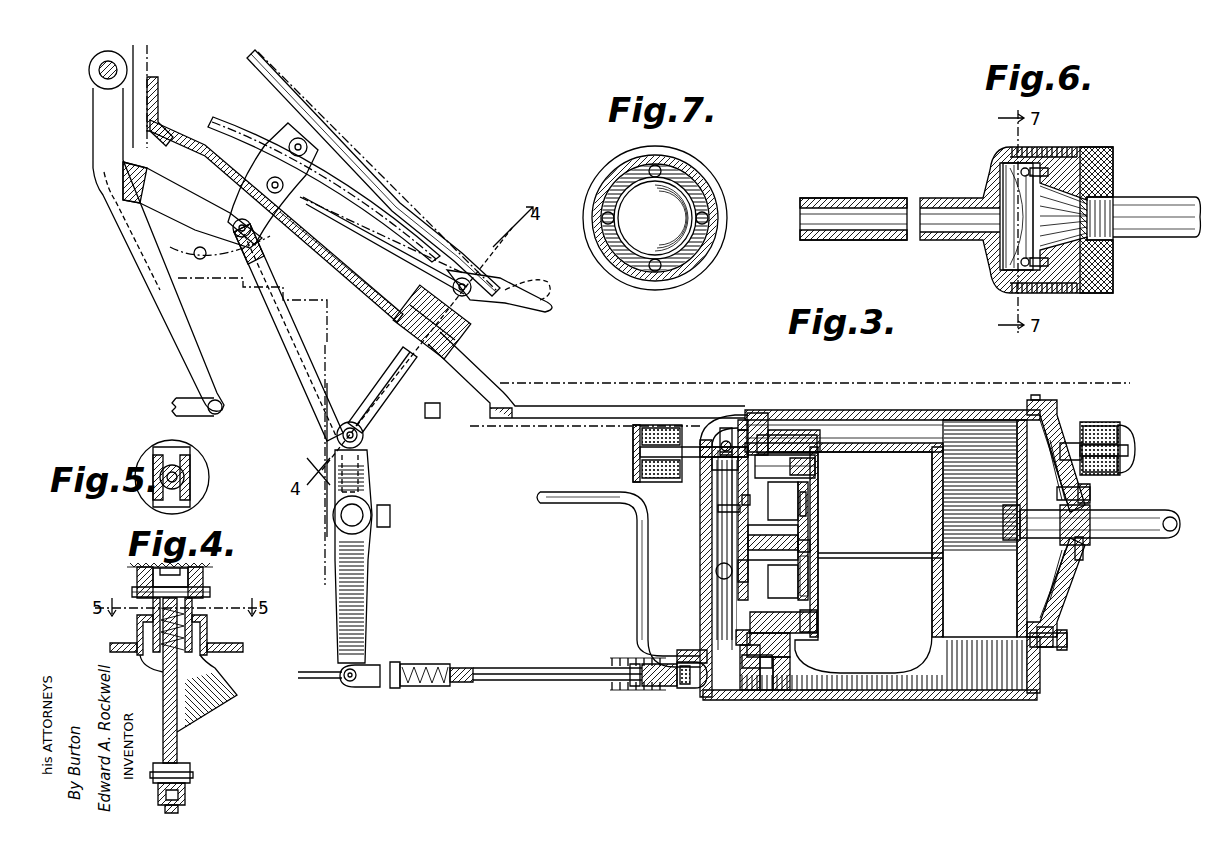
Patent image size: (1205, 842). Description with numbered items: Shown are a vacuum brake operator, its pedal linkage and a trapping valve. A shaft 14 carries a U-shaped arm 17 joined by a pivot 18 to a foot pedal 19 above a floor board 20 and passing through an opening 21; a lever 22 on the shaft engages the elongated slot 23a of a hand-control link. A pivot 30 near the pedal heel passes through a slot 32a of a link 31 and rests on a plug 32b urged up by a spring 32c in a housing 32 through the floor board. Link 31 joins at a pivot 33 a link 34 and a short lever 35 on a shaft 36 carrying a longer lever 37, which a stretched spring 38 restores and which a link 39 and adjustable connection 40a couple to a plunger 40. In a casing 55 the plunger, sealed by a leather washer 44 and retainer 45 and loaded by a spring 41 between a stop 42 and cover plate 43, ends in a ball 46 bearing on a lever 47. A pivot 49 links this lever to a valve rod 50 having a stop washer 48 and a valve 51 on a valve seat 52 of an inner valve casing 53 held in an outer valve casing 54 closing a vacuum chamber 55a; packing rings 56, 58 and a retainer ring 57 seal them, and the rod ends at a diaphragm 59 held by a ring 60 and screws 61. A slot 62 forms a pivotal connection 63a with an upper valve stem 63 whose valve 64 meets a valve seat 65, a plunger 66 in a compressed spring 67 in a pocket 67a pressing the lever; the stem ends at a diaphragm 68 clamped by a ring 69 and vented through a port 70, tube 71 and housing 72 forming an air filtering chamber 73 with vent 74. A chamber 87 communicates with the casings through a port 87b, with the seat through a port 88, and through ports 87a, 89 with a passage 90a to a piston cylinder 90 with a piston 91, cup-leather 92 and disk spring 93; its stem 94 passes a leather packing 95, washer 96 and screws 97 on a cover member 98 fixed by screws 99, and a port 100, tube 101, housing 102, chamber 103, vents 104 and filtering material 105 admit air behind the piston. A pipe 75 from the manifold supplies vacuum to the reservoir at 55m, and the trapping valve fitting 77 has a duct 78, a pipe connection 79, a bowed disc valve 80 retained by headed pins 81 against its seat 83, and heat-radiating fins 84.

In FIG. 3, the shaft 14 is at (92, 72).
In FIG. 3, the U-shaped arm 17 is at (154, 182).
In FIG. 3, the pivot 18 is at (306, 150).
In FIG. 3, the foot pedal 19 is at (397, 205).
In FIG. 3, the floor board 20 is at (485, 372).
In FIG. 3, the opening 21 is at (288, 214).
In FIG. 3, the lever 22 is at (160, 286).
In FIG. 3, the elongated slot 23a is at (178, 400).
In FIG. 3, the pivot 30 is at (465, 279).
In FIG. 4, the pivot 30 is at (208, 580).
In FIG. 3, the link 31 is at (392, 366).
In FIG. 5, the link 31 is at (185, 470).
In FIG. 4, the link 31 is at (178, 752).
In FIG. 3, the housing 32 is at (472, 330).
In FIG. 5, the housing 32 is at (148, 493).
In FIG. 4, the housing 32 is at (208, 630).
In FIG. 3, the slot 32a is at (500, 284).
In FIG. 4, the slot 32a is at (205, 594).
In FIG. 4, the plug 32b is at (130, 580).
In FIG. 5, the spring 32c is at (192, 482).
In FIG. 4, the spring 32c is at (192, 620).
In FIG. 3, the pivot 33 is at (337, 440).
In FIG. 4, the pivot 33 is at (194, 773).
In FIG. 3, the link 34 is at (305, 343).
In FIG. 3, the short lever 35 is at (358, 478).
In FIG. 4, the short lever 35 is at (180, 808).
In FIG. 3, the shaft 36 is at (334, 517).
In FIG. 3, the longer lever 37 is at (348, 601).
In FIG. 3, the stretched spring 38 is at (322, 679).
In FIG. 3, the link 39 is at (368, 688).
In FIG. 3, the plunger 40 is at (486, 682).
In FIG. 3, the adjustable connection 40a is at (431, 687).
In FIG. 3, the spring 41 is at (633, 688).
In FIG. 3, the stop 42 is at (612, 684).
In FIG. 3, the cover plate 43 is at (688, 690).
In FIG. 3, the leather washer 44 is at (669, 690).
In FIG. 3, the retainer 45 is at (672, 688).
In FIG. 3, the ball 46 is at (690, 652).
In FIG. 3, the lever 47 is at (718, 600).
In FIG. 3, the stop washer 48 is at (773, 542).
In FIG. 3, the pivot 49 is at (716, 573).
In FIG. 3, the valve rod 50 is at (738, 546).
In FIG. 3, the valve 51 is at (738, 594).
In FIG. 3, the valve seat 52 is at (783, 586).
In FIG. 3, the inner valve casing 53 is at (806, 524).
In FIG. 3, the outer valve casing 54 is at (806, 500).
In FIG. 3, the casing 55 is at (842, 700).
In FIG. 3, the vacuum chamber 55a is at (883, 568).
In FIG. 3, the vacuum reservoir connection 55m is at (822, 700).
In FIG. 3, the packing ring 56 is at (790, 652).
In FIG. 3, the retainer ring 57 is at (740, 634).
In FIG. 3, the packing ring 58 is at (818, 616).
In FIG. 3, the diaphragm 59 is at (818, 553).
In FIG. 3, the ring 60 is at (808, 545).
In FIG. 3, the screws 61 is at (810, 555).
In FIG. 3, the slot 62 is at (724, 430).
In FIG. 3, the upper valve stem 63 is at (730, 440).
In FIG. 3, the pivotal connection 63a is at (722, 450).
In FIG. 3, the valve 64 is at (800, 464).
In FIG. 3, the valve seat 65 is at (812, 468).
In FIG. 3, the plunger 66 is at (742, 668).
In FIG. 3, the compressed spring 67 is at (748, 690).
In FIG. 3, the pocket 67a is at (767, 692).
In FIG. 3, the diaphragm 68 is at (758, 418).
In FIG. 3, the clamping ring 69 is at (742, 420).
In FIG. 3, the port 70 is at (690, 446).
In FIG. 3, the tube 71 is at (665, 428).
In FIG. 3, the housing 72 is at (648, 426).
In FIG. 3, the air filtering chamber 73 is at (636, 458).
In FIG. 3, the atmosphere vent 74 is at (705, 488).
In FIG. 3, the pipe 75 is at (637, 546).
In FIG. 7, the fitting 77 is at (688, 266).
In FIG. 6, the fitting 77 is at (966, 248).
In FIG. 6, the duct 78 is at (878, 200).
In FIG. 6, the pipe connection 79 is at (1145, 200).
In FIG. 7, the disc valve 80 is at (665, 230).
In FIG. 6, the disc valve 80 is at (1020, 210).
In FIG. 7, the headed pins 81 is at (705, 213).
In FIG. 6, the headed pins 81 is at (1020, 170).
In FIG. 7, the valve seat 83 is at (690, 247).
In FIG. 6, the valve seat 83 is at (1098, 178).
In FIG. 7, the heat-radiating fins 84 is at (712, 212).
In FIG. 6, the heat-radiating fins 84 is at (1062, 150).
In FIG. 3, the chamber 87 is at (783, 501).
In FIG. 3, the port 87a is at (745, 497).
In FIG. 3, the port 87b is at (722, 508).
In FIG. 3, the port 88 is at (810, 486).
In FIG. 3, the port 89 is at (786, 438).
In FIG. 3, the piston cylinder 90 is at (980, 528).
In FIG. 3, the passage 90a is at (890, 424).
In FIG. 3, the piston 91 is at (1017, 573).
In FIG. 3, the cup-leather 92 is at (1060, 614).
In FIG. 3, the disk spring 93 is at (1046, 590).
In FIG. 3, the piston stem 94 is at (1135, 538).
In FIG. 3, the leather packing 95 is at (1092, 512).
In FIG. 3, the washer 96 is at (1081, 560).
In FIG. 3, the screws 97 is at (1092, 493).
In FIG. 3, the cover member 98 is at (1056, 626).
In FIG. 3, the screws 99 is at (1069, 640).
In FIG. 3, the port 100 is at (1072, 443).
In FIG. 3, the tube 101 is at (1110, 428).
In FIG. 3, the housing 102 is at (1114, 440).
In FIG. 3, the chamber 103 is at (1134, 456).
In FIG. 3, the air vents 104 is at (1096, 422).
In FIG. 3, the air filtering material 105 is at (1130, 449).